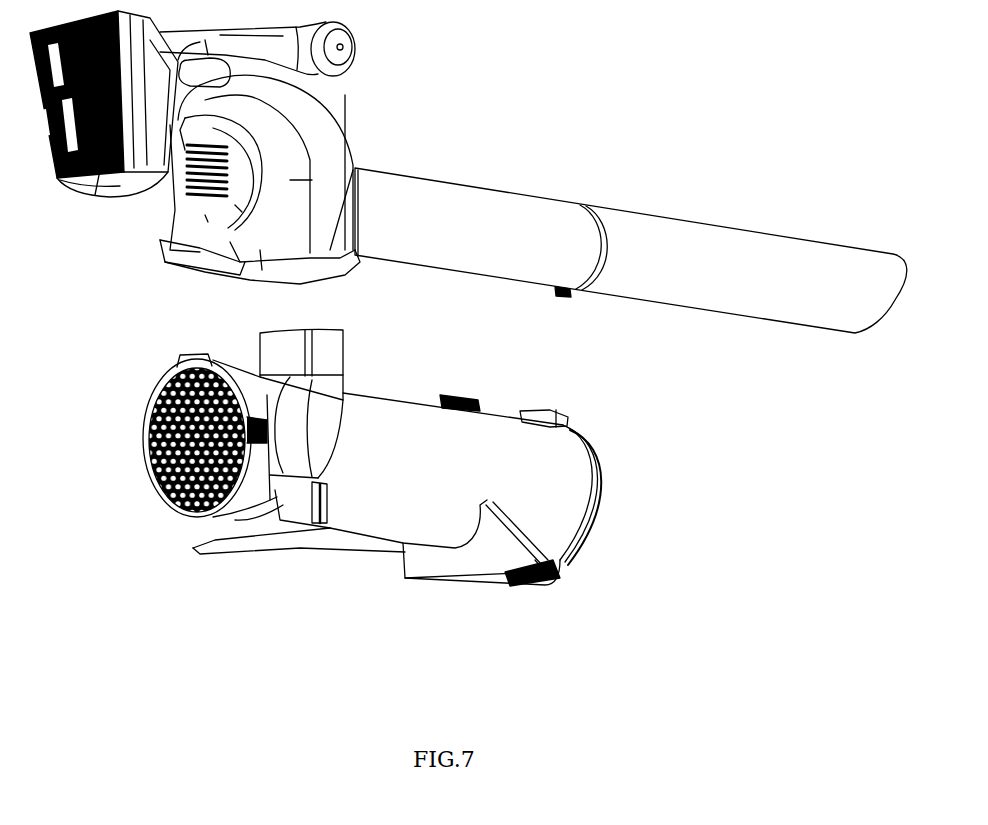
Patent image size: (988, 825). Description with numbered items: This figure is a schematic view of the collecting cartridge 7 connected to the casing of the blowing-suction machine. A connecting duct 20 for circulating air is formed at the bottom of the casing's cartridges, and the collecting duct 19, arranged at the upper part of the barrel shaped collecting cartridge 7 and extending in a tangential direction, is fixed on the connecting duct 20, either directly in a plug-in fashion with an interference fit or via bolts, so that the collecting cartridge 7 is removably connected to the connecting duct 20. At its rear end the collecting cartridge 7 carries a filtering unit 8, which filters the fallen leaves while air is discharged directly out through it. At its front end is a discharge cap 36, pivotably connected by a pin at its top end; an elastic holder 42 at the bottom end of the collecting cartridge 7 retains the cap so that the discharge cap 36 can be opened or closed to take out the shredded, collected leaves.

The collecting cartridge 7 is at (378, 488).
The filtering unit 8 is at (172, 500).
The collecting duct 19 is at (328, 352).
The connecting duct 20 is at (355, 168).
The discharge cap 36 is at (598, 490).
The elastic holder 42 is at (540, 578).